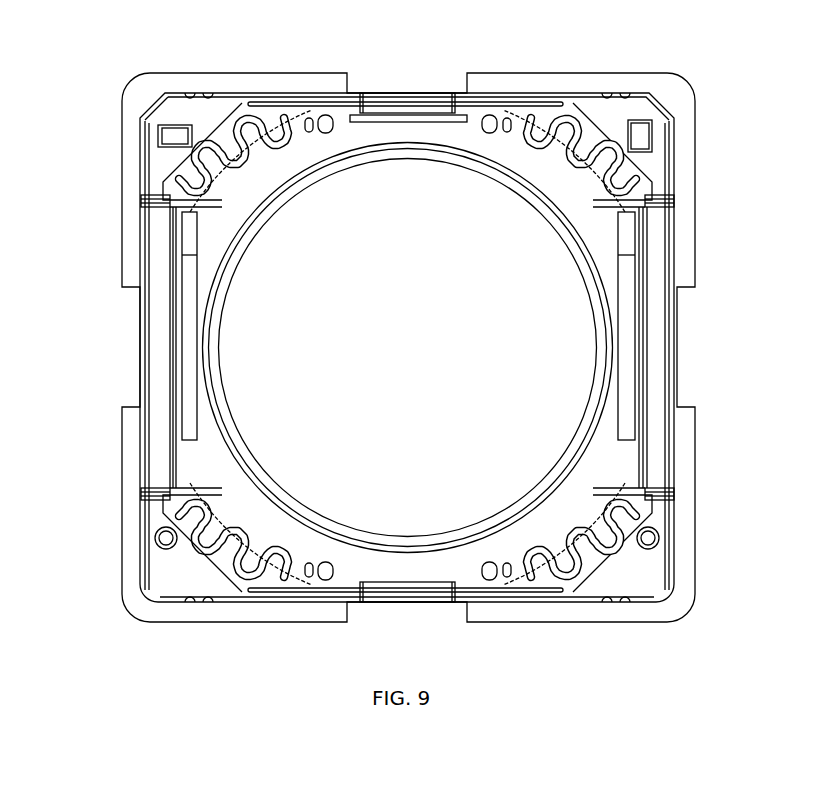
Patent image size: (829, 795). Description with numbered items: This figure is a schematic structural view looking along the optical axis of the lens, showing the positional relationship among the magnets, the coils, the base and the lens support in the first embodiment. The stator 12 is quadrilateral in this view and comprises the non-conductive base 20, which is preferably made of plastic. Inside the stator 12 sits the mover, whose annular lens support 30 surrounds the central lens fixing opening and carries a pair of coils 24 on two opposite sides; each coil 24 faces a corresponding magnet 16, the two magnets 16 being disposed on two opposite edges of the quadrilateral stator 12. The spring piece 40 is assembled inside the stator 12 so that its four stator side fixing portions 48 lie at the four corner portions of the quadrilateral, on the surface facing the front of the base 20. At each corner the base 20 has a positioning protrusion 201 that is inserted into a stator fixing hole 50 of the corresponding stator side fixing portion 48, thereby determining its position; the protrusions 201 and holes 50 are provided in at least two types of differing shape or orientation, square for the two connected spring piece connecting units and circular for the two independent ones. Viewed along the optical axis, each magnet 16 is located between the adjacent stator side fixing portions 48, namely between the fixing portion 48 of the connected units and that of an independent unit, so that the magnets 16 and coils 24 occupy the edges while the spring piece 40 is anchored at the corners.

The stator 12 is at (690, 347).
The magnet 16 is at (148, 318).
The base 20 is at (130, 100).
The coil 24 is at (173, 376).
The lens support 30 is at (200, 213).
The spring piece 40 is at (663, 563).
The stator side fixing portion 48 is at (652, 162).
The stator fixing hole 50 is at (708, 82).
The positioning protrusion 201 is at (641, 128).